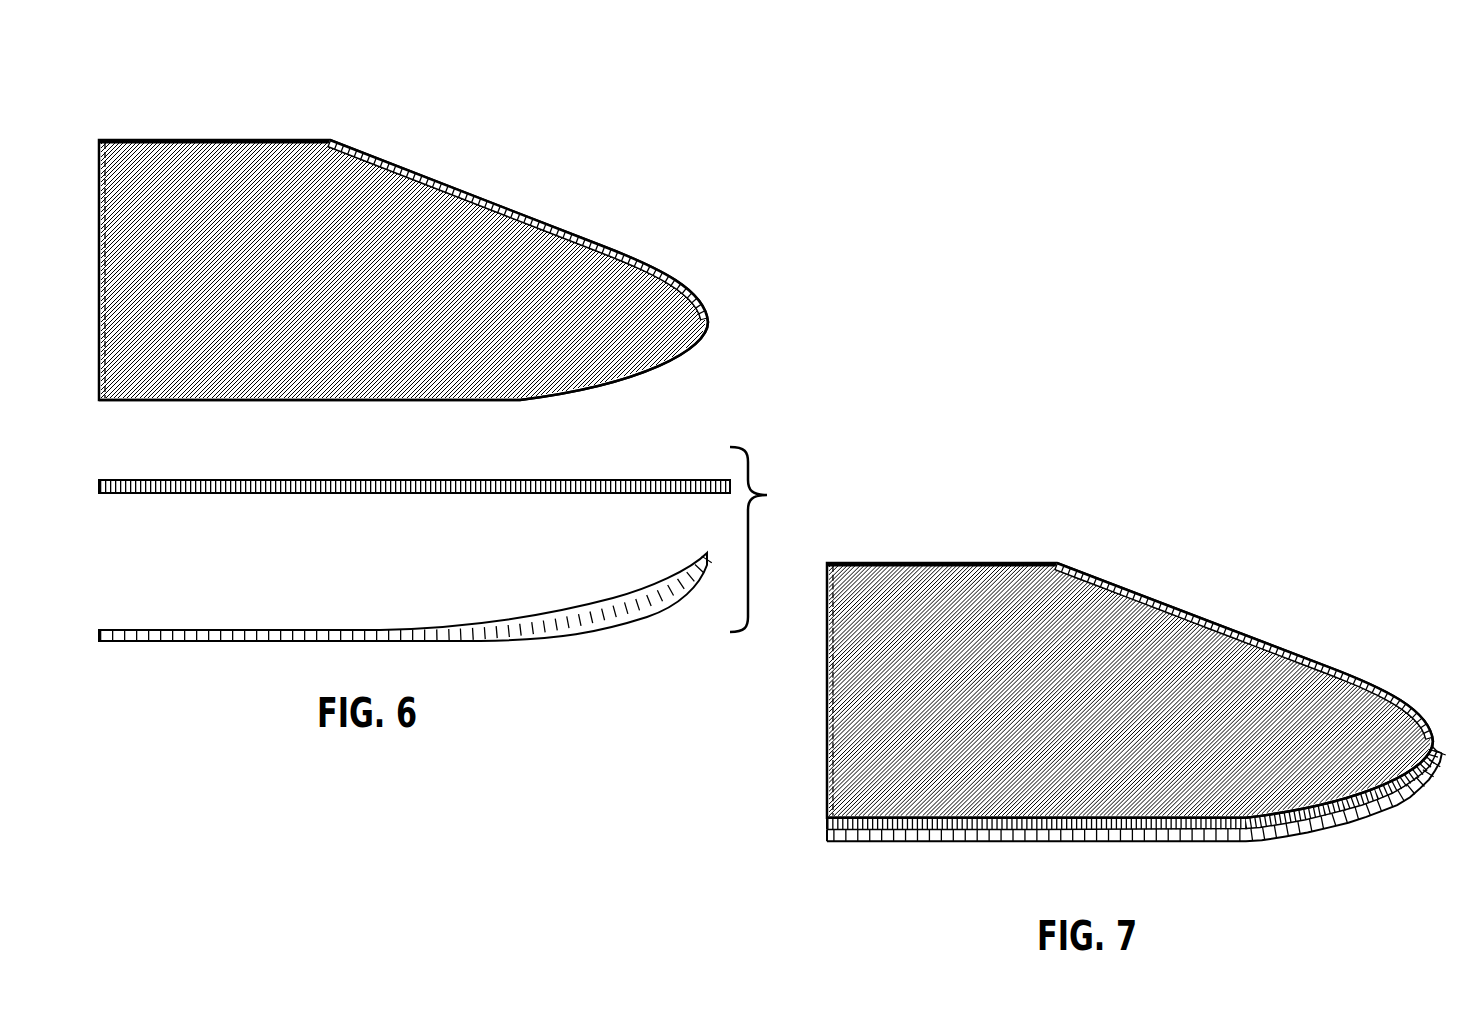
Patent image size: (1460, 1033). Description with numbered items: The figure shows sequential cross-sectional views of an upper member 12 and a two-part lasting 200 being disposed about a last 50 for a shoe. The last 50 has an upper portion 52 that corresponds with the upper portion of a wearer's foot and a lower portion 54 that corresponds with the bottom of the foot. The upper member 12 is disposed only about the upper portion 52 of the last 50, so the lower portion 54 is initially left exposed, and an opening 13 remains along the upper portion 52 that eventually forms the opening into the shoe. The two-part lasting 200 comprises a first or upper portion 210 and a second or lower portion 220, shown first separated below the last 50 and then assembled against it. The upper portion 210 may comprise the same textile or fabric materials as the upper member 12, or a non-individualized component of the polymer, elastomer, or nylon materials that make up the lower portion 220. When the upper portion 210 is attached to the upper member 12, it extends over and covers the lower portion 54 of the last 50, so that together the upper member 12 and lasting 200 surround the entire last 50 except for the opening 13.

In FIG. 6, the upper member 12 is at (483, 203).
In FIG. 7, the upper member 12 is at (1145, 597).
In FIG. 6, the opening 13 is at (157, 132).
In FIG. 7, the opening 13 is at (905, 555).
In FIG. 6, the last 50 is at (193, 139).
In FIG. 7, the last 50 is at (922, 562).
In FIG. 6, the upper portion 52 is at (408, 166).
In FIG. 7, the upper portion 52 is at (1223, 622).
In FIG. 6, the lower portion 54 is at (279, 410).
In FIG. 7, the lower portion 54 is at (1021, 832).
In FIG. 6, the two-part lasting 200 is at (780, 539).
In FIG. 7, the two-part lasting 200 is at (1286, 850).
In FIG. 6, the upper portion 210 is at (362, 480).
In FIG. 7, the upper portion 210 is at (827, 823).
In FIG. 6, the lower portion 220 is at (390, 630).
In FIG. 7, the lower portion 220 is at (827, 840).